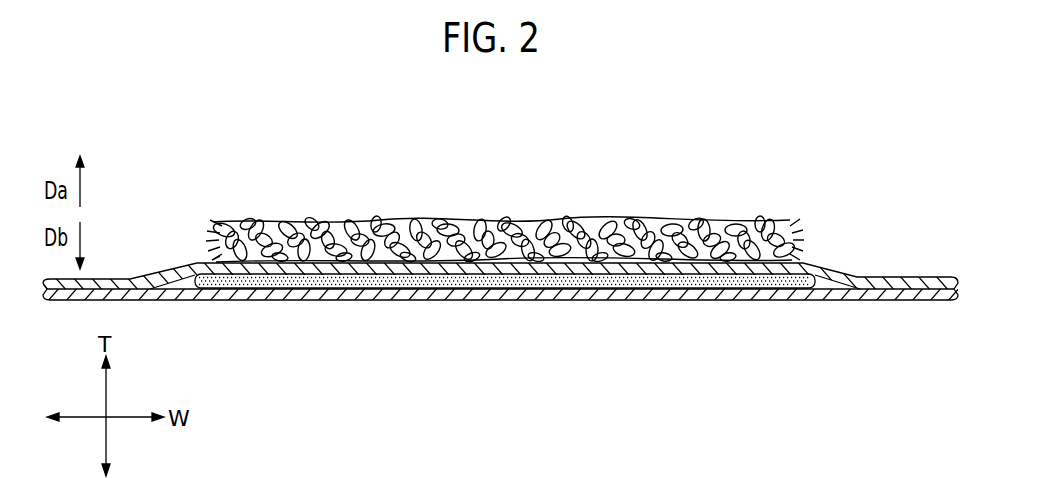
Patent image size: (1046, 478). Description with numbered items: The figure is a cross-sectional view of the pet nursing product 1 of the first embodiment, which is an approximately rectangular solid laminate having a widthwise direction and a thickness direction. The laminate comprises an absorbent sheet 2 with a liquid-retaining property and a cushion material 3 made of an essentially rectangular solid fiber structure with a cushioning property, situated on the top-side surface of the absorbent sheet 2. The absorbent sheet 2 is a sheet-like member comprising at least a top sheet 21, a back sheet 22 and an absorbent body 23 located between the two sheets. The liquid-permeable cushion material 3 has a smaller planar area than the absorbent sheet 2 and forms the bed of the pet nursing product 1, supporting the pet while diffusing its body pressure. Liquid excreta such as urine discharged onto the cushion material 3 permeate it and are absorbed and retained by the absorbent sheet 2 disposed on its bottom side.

The pet nursing product 1 is at (812, 108).
The absorbent sheet 2 is at (860, 230).
The cushion material 3 is at (783, 220).
The top sheet 21 is at (853, 273).
The back sheet 22 is at (845, 300).
The absorbent body 23 is at (773, 288).